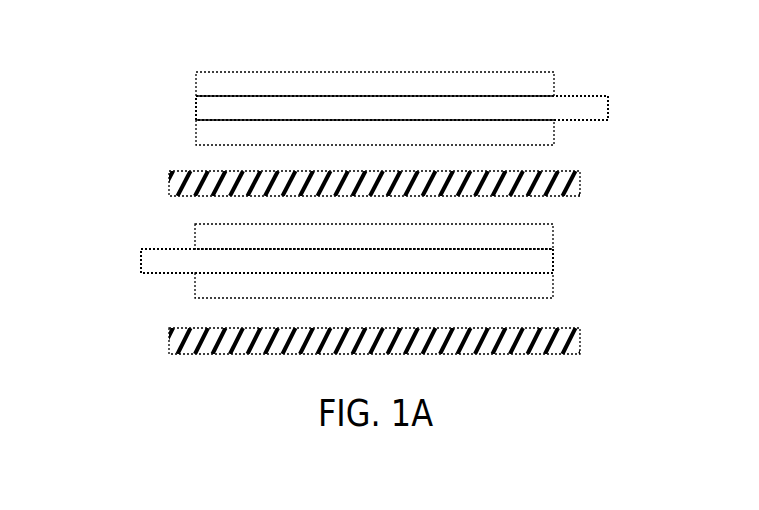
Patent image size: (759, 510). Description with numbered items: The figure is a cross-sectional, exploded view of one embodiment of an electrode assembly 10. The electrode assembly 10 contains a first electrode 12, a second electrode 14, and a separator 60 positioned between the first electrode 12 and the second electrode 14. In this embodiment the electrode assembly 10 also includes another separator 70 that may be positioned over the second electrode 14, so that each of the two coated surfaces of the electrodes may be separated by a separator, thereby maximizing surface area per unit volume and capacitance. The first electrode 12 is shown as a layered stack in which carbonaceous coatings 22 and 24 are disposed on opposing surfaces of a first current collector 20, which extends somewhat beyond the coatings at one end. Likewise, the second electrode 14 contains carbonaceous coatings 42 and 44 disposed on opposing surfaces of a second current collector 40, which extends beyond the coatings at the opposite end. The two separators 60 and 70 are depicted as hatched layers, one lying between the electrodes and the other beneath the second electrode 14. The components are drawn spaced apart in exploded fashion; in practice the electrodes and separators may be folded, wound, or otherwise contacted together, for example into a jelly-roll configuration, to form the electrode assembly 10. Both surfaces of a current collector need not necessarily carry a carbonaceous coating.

The electrode assembly 10 is at (99, 82).
The first electrode 12 is at (178, 94).
The second electrode 14 is at (126, 258).
The first current collector 20 is at (608, 98).
The carbonaceous coating 22 is at (545, 68).
The carbonaceous coating 24 is at (554, 143).
The second current collector 40 is at (553, 258).
The carbonaceous coating 42 is at (553, 226).
The carbonaceous coating 44 is at (553, 290).
The separator 60 is at (580, 187).
The separator 70 is at (580, 338).